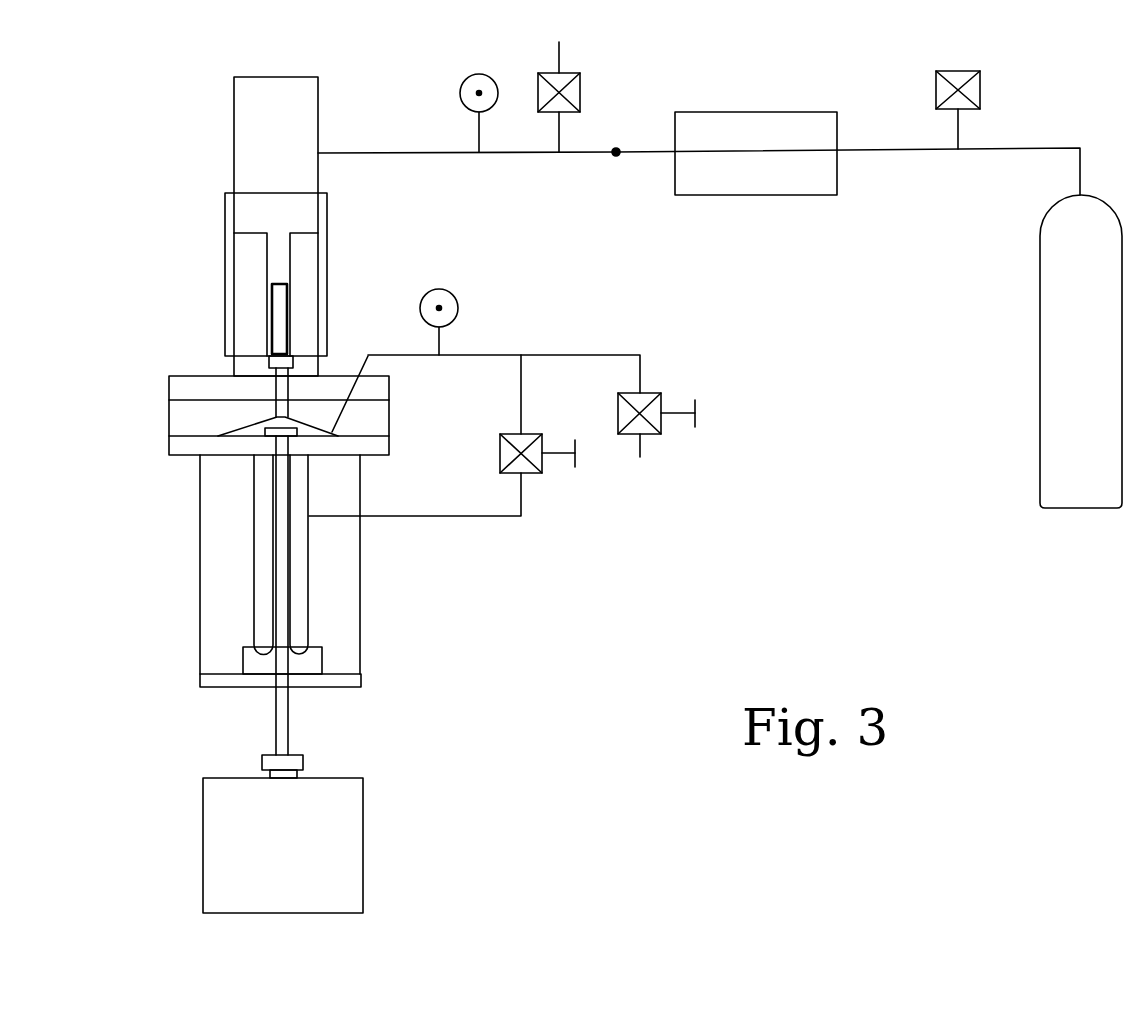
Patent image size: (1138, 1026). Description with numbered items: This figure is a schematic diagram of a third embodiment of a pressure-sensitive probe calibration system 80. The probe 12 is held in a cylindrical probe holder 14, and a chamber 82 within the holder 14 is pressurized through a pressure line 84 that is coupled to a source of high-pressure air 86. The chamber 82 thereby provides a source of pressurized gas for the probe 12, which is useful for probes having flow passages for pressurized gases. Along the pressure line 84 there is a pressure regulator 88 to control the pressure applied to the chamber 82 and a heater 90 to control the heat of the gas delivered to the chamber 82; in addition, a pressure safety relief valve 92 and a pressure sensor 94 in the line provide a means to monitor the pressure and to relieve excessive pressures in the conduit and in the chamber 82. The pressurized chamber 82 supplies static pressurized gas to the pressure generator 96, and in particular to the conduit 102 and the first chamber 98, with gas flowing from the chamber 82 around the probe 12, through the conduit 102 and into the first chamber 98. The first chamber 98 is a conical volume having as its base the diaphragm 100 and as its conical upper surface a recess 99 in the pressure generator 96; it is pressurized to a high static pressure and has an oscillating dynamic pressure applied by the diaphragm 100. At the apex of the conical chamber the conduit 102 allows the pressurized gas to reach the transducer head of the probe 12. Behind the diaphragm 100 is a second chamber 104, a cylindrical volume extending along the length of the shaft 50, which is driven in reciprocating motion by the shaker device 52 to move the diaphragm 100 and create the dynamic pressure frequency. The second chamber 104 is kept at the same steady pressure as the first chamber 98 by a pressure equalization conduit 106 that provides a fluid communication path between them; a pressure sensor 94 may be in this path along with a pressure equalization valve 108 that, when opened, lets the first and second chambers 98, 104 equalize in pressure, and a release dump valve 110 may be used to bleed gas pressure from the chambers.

The pressure-sensitive probe calibration system 80 is at (98, 580).
The chamber 82 is at (283, 176).
The pressure line 84 is at (355, 153).
The source of high-pressure air 86 is at (1088, 263).
The pressure regulator 88 is at (981, 88).
The heater 90 is at (770, 112).
The pressure safety relief valve 92 is at (580, 88).
The pressure sensor 94 is at (470, 78).
The pressure generator 96 is at (228, 493).
The first chamber 98 is at (265, 428).
The recess 99 is at (313, 423).
The diaphragm 100 is at (312, 437).
The conduit 102 is at (283, 392).
The second chamber 104 is at (296, 601).
The pressure equalization conduit 106 is at (460, 356).
The pressure equalization valve 108 is at (532, 473).
The release dump valve 110 is at (655, 393).
The probe 12 is at (280, 312).
The cylindrical probe holder 14 is at (322, 255).
The shaft 50 is at (287, 727).
The shaker device 52 is at (298, 857).